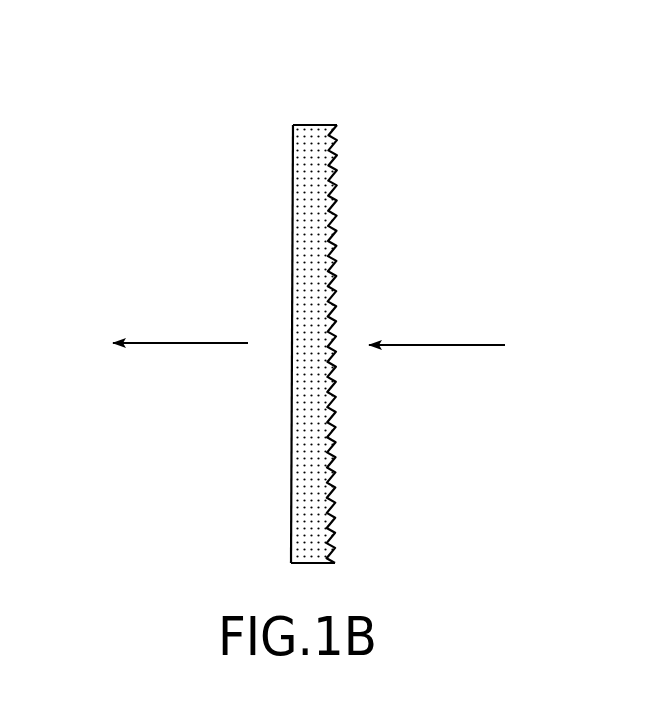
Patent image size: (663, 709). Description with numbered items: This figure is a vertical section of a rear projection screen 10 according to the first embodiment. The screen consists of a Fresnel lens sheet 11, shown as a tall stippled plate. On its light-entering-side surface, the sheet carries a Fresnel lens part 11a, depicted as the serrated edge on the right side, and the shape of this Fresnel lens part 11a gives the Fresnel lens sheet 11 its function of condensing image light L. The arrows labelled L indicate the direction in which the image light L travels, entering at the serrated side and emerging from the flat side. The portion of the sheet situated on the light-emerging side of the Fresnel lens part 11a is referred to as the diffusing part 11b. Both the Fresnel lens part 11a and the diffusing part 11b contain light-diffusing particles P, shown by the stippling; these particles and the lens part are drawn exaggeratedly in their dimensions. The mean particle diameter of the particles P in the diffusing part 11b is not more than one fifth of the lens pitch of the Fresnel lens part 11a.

The rear projection screen 10 is at (342, 304).
The Fresnel lens sheet 11 is at (317, 304).
The Fresnel lens part 11a is at (335, 302).
The diffusing part 11b is at (298, 302).
The light-diffusing particles P is at (305, 262).
The image light L is at (214, 343).